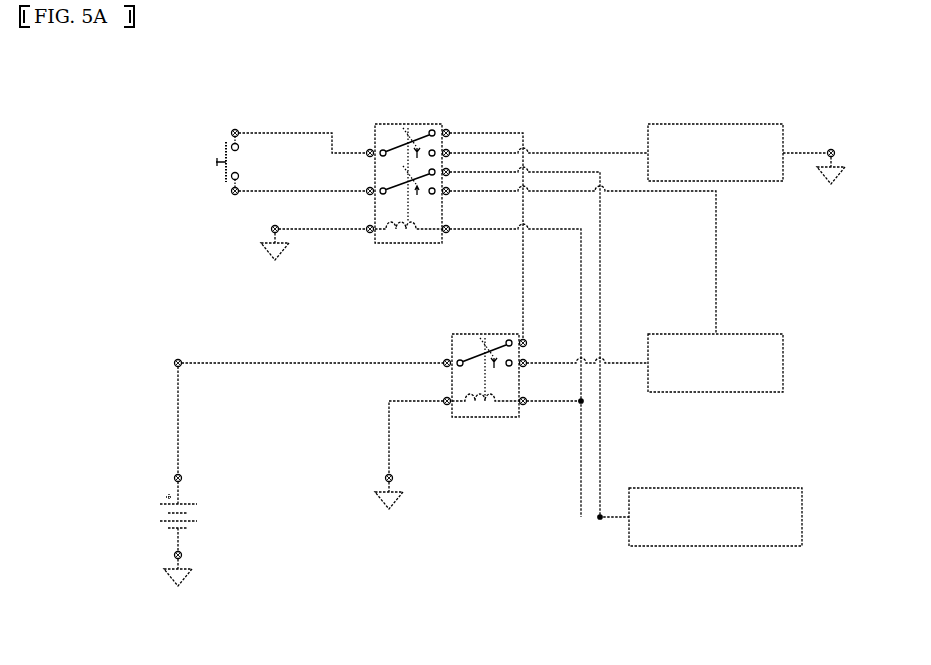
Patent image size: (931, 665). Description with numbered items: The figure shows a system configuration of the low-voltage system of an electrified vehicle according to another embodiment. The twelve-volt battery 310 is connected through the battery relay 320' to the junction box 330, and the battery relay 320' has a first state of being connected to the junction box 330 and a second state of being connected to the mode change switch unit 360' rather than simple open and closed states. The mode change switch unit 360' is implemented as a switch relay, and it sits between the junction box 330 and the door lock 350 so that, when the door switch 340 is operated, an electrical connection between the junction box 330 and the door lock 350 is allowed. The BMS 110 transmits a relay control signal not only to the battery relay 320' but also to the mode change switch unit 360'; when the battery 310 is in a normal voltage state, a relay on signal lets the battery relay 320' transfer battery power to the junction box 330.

The BMS 110 is at (752, 547).
The 12V battery 310 is at (162, 505).
The battery relay 320' is at (485, 401).
The junction box 330 is at (747, 393).
The door switch 340 is at (216, 162).
The door lock 350 is at (769, 182).
The mode change switch unit 360' is at (408, 210).